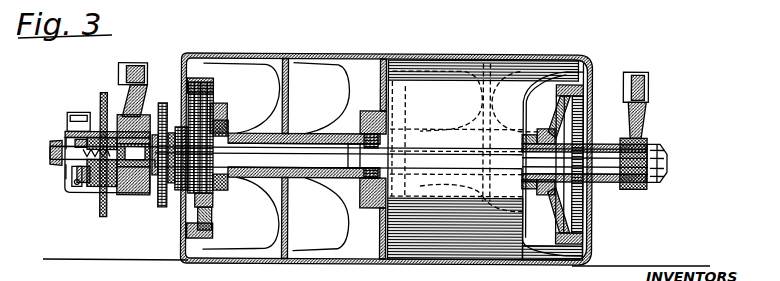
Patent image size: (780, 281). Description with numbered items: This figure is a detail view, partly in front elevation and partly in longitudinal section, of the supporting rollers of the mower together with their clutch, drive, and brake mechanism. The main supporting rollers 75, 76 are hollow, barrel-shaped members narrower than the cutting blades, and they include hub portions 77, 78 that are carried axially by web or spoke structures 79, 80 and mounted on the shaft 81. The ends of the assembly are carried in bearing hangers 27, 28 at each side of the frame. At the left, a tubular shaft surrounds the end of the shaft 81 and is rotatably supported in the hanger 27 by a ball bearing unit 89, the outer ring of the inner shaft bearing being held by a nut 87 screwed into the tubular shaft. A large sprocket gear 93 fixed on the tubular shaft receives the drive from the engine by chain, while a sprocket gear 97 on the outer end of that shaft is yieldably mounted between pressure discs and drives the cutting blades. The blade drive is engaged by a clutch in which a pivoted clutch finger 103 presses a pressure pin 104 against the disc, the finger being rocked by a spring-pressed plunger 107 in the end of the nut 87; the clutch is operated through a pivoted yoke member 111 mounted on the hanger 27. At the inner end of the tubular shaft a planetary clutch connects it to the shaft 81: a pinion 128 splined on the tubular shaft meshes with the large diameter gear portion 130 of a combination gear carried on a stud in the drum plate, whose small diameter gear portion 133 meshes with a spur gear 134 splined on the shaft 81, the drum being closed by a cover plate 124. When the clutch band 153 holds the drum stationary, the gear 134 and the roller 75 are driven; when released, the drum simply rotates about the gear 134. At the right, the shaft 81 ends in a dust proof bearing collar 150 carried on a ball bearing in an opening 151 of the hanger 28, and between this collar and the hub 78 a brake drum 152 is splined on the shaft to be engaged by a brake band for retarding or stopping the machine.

The bearing hanger 27 is at (156, 59).
The bearing hanger 28 is at (647, 101).
The main supporting roller 75 is at (350, 56).
The main supporting roller 76 is at (487, 57).
The hub portion 77 is at (308, 140).
The hub portion 78 is at (453, 132).
The web or spoke structure 79 is at (300, 66).
The web or spoke structure 80 is at (512, 138).
The shaft 81 is at (262, 150).
The nut 87 is at (84, 192).
The ball bearing unit 89 is at (128, 195).
The large sprocket gear 93 is at (162, 103).
The sprocket gear 97 is at (103, 97).
The clutch finger 103 is at (70, 175).
The pressure pin 104 is at (77, 193).
The plunger 107 is at (67, 132).
The pivoted yoke member 111 is at (56, 153).
The cover plate 124 is at (180, 200).
The pinion 128 is at (208, 210).
The large diameter gear portion 130 is at (203, 90).
The small diameter gear portion 133 is at (210, 99).
The spur gear 134 is at (212, 199).
The dust proof bearing collar 150 is at (648, 143).
The opening 151 is at (645, 184).
The brake drum 152 is at (588, 210).
The clutch band 153 is at (200, 77).